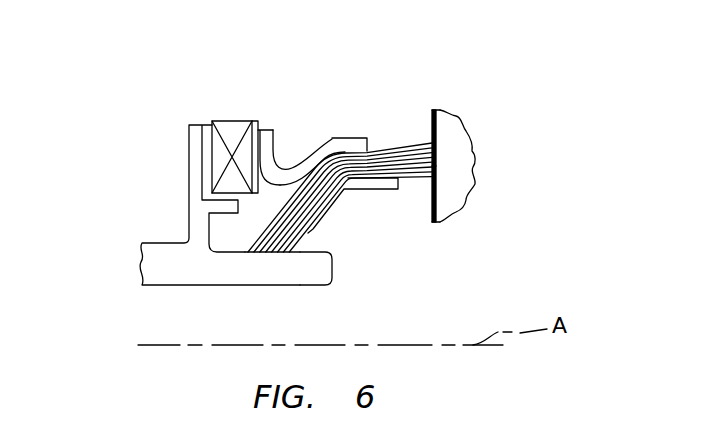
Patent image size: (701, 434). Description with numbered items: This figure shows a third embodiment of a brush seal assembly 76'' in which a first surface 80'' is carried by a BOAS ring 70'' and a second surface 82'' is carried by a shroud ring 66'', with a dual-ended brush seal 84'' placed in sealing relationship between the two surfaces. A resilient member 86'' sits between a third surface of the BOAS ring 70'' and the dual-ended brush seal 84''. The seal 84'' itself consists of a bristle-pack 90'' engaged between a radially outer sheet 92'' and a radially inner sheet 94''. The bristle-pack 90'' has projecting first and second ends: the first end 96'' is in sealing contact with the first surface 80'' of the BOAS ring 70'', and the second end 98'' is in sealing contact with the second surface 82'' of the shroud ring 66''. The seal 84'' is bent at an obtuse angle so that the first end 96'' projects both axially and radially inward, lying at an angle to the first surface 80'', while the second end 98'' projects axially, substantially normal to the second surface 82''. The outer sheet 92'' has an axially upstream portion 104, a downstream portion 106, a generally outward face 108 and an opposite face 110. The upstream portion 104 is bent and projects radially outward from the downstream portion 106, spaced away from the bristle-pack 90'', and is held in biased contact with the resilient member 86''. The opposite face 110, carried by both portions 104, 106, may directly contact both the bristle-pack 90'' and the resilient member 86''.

The BOAS ring 70'' is at (171, 209).
The first end 96'' is at (272, 294).
The first surface 80'' is at (345, 273).
The resilient member 86'' is at (220, 123).
The upstream portion 104 is at (256, 121).
The dual-ended brush seal 84'' is at (336, 111).
The opposite face 110 is at (278, 192).
The outer sheet 92'' is at (302, 125).
The outward face 108 is at (332, 137).
The downstream portion 106 is at (392, 145).
The bristle-pack 90'' is at (369, 163).
The inner sheet 94'' is at (362, 223).
The second end 98'' is at (485, 134).
The second surface 82'' is at (442, 222).
The brush seal assembly 76'' is at (503, 118).
The shroud ring 66'' is at (512, 166).